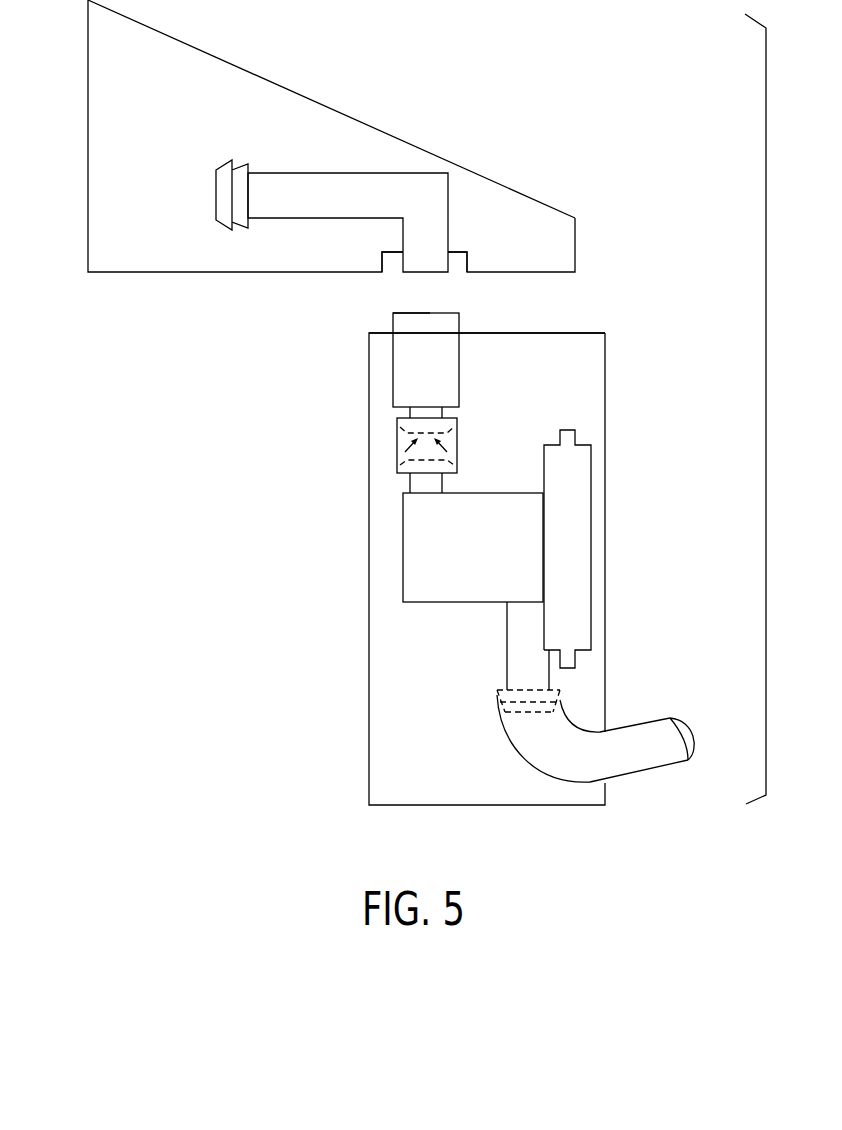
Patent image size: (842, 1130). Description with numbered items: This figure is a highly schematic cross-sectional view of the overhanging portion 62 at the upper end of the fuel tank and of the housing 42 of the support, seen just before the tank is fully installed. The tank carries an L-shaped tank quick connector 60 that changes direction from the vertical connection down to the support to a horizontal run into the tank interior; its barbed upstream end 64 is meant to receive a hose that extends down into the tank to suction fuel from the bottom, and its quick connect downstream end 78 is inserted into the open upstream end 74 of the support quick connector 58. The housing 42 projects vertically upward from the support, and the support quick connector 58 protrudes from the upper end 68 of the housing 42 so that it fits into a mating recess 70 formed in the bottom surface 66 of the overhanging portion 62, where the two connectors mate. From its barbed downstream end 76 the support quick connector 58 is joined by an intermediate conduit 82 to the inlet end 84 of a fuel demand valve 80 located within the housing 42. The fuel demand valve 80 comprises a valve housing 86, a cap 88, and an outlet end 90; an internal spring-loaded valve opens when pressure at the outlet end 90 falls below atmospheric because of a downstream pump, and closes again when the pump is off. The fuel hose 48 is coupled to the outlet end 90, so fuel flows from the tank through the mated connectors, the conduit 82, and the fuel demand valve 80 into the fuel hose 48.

The housing 42 is at (370, 642).
The fuel hose 48 is at (653, 770).
The support quick connector 58 is at (459, 350).
The tank quick connector 60 is at (358, 173).
The overhanging portion 62 is at (275, 84).
The barbed upstream end 64 is at (219, 232).
The bottom surface 66 is at (125, 280).
The upper end 68 is at (541, 326).
The recess 70 is at (385, 258).
The open upstream end 74 is at (410, 306).
The barbed downstream end 76 is at (397, 452).
The quick connect downstream end 78 is at (435, 278).
The fuel demand valve 80 is at (403, 545).
The conduit 82 is at (458, 428).
The inlet end 84 is at (458, 437).
The valve housing 86 is at (490, 565).
The cap 88 is at (582, 548).
The outlet end 90 is at (527, 726).